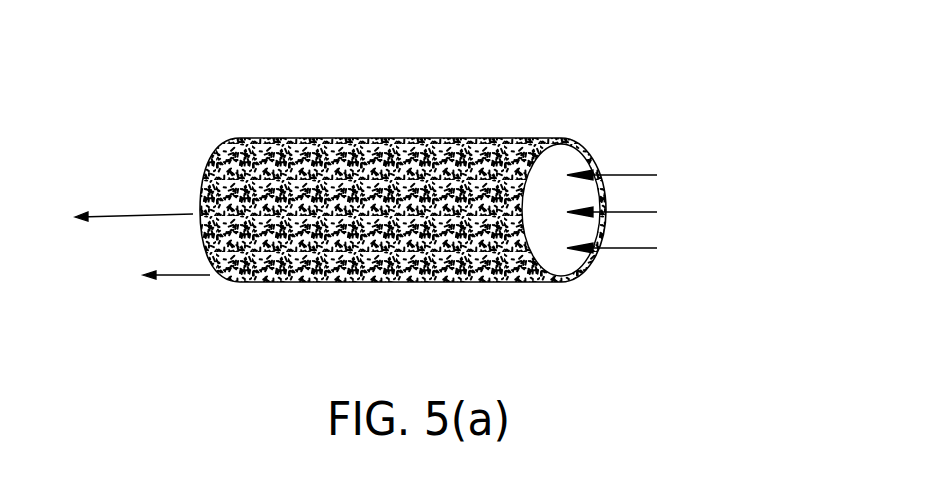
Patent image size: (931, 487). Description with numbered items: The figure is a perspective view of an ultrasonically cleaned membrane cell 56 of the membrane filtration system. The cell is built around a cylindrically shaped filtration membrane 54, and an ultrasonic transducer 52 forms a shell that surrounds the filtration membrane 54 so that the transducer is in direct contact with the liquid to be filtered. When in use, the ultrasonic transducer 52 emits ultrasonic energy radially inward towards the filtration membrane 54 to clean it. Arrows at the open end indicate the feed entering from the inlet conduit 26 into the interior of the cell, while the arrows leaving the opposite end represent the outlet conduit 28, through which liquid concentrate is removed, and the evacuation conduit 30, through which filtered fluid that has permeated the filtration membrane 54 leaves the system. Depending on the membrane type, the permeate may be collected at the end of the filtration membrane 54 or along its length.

The inlet conduit 26 is at (640, 211).
The outlet conduit 28 is at (133, 215).
The evacuation conduit 30 is at (180, 278).
The ultrasonic transducer 52 is at (490, 143).
The filtration membrane 54 is at (553, 222).
The ultrasonically cleaned membrane cell 56 is at (665, 77).